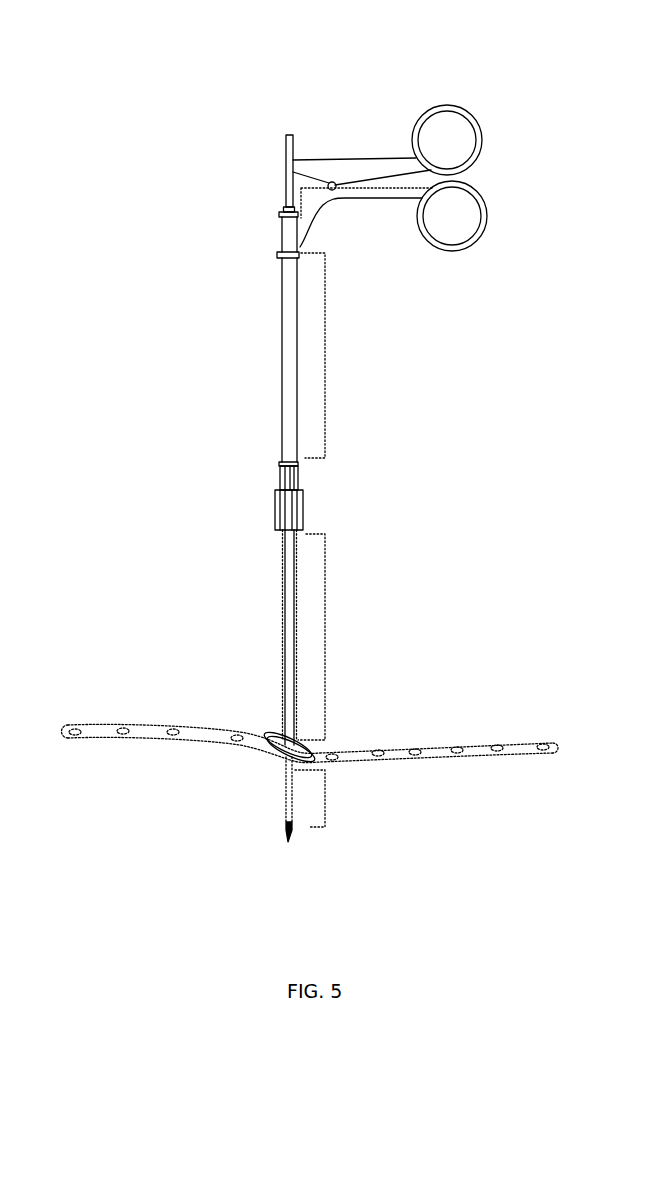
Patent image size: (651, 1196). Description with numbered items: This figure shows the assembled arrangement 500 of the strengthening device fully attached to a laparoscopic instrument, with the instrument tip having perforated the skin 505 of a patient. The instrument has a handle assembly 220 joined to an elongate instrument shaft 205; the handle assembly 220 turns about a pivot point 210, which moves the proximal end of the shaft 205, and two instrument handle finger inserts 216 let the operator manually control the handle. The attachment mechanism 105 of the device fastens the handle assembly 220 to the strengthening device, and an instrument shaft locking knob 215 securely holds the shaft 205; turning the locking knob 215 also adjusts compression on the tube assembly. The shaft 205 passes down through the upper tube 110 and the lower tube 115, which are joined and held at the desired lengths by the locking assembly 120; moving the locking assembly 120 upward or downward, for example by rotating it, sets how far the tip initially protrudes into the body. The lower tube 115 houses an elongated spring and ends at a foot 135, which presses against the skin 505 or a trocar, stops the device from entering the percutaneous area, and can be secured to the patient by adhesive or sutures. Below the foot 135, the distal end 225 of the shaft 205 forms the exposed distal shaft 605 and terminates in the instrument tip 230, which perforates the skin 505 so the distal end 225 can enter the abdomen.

The catheter insertion system 500 is at (158, 54).
The instrument shaft 205 is at (282, 152).
The pivot point 210 is at (333, 180).
The instrument shaft locking knob 215 is at (276, 209).
The attachment mechanism 105 is at (277, 253).
The upper tube 110 is at (325, 355).
The locking assembly 120 is at (273, 508).
The lower tube 115 is at (325, 628).
The foot 135 is at (273, 735).
The distal end 225 is at (287, 795).
The instrument tip 230 is at (287, 830).
The exposed distal shaft 605 is at (325, 790).
The skin 505 is at (445, 747).
The handle assembly 220 is at (370, 199).
The instrument handle finger inserts 216 is at (452, 218).